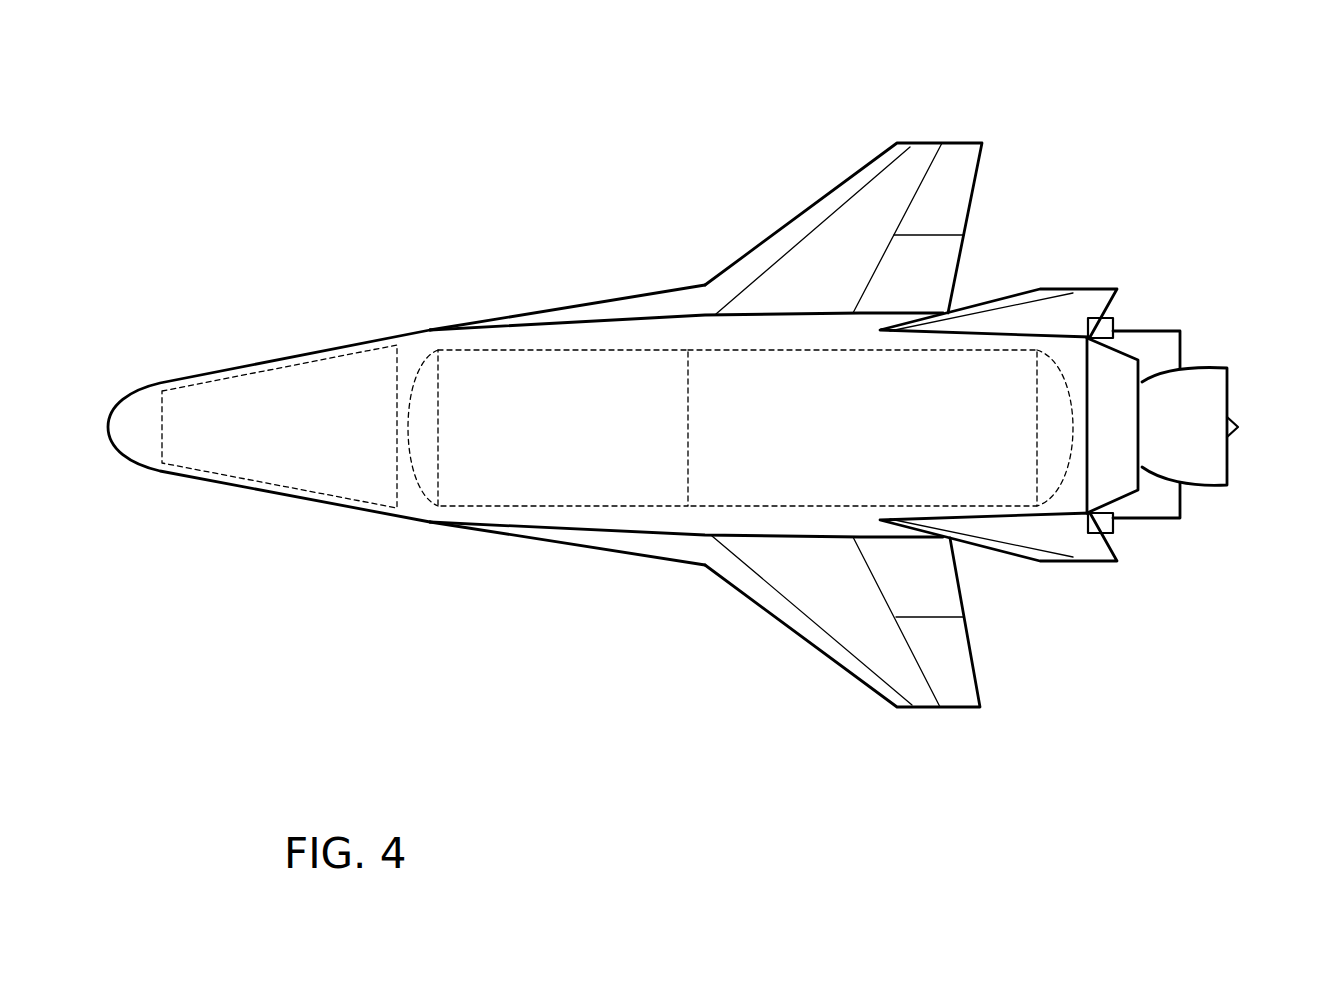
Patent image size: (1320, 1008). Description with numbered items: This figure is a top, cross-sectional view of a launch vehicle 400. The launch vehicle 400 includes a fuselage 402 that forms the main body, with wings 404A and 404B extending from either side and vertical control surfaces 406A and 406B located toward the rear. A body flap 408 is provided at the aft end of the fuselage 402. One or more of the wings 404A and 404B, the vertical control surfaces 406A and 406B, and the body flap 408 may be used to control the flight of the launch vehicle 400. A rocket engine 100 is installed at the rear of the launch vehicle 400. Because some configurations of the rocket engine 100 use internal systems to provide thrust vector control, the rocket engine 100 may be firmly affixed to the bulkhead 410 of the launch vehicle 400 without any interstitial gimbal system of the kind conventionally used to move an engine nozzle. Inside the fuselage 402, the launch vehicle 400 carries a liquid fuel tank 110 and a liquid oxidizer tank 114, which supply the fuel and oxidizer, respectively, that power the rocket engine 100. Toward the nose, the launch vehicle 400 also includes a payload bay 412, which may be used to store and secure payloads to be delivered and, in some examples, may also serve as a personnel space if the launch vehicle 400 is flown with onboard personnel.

The launch vehicle 400 is at (692, 417).
The fuselage 402 is at (501, 245).
The payload bay 412 is at (234, 391).
The liquid oxidizer tank 114 is at (555, 378).
The liquid fuel tank 110 is at (760, 372).
The wing 404A is at (807, 208).
The wing 404B is at (833, 662).
The vertical control surface 406A is at (1096, 283).
The vertical control surface 406B is at (1097, 563).
The body flap 408 is at (1148, 330).
The bulkhead 410 is at (1156, 358).
The rocket engine 100 is at (1182, 431).